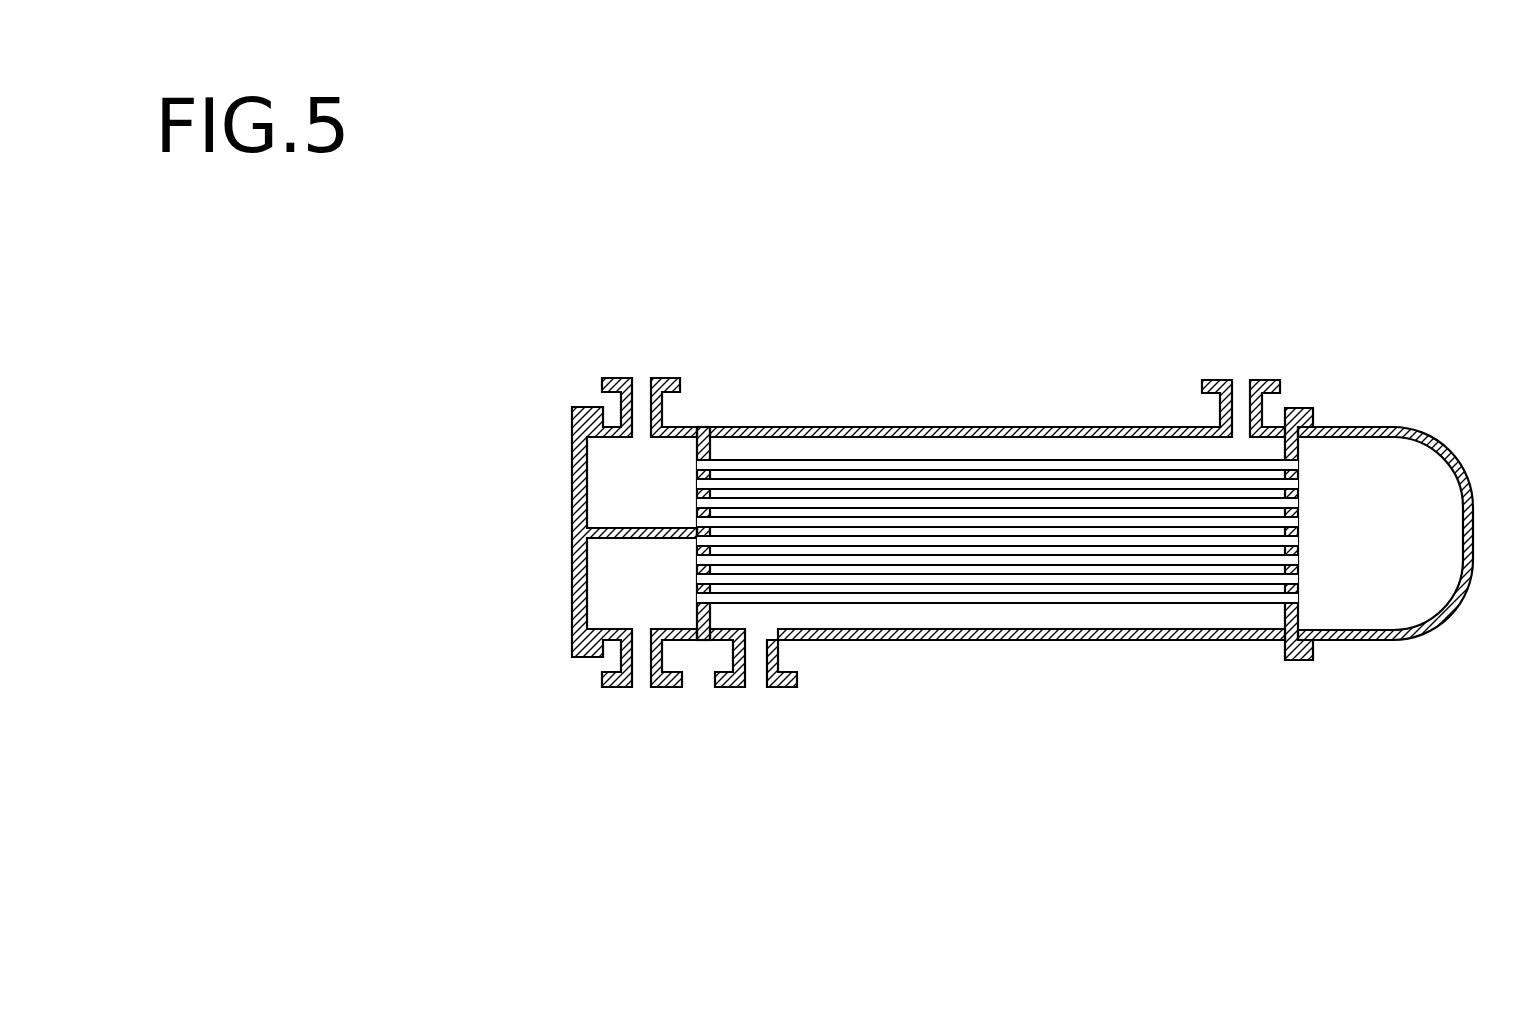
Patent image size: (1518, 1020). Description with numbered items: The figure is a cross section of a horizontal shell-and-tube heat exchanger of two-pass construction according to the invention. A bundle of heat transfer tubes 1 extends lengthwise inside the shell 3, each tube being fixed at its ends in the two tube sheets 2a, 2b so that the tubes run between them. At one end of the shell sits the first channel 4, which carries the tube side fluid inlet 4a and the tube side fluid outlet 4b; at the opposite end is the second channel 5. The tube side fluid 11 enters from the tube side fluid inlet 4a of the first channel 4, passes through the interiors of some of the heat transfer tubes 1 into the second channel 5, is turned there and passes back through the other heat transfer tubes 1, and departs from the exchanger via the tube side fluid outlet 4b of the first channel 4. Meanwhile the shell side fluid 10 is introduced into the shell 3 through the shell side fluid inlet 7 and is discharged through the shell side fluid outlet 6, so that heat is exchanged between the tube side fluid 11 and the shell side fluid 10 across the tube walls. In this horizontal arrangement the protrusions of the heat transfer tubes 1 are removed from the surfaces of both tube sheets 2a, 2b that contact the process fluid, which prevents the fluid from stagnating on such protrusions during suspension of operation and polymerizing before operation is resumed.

The heat transfer tubes 1 is at (1102, 462).
The tube sheet 2a is at (705, 425).
The tube sheet 2b is at (1292, 408).
The shell 3 is at (970, 430).
The first channel 4 is at (677, 425).
The tube side fluid inlet 4a is at (622, 688).
The tube side fluid outlet 4b is at (617, 377).
The second channel 5 is at (1360, 427).
The shell side fluid outlet 6 is at (1242, 383).
The shell side fluid inlet 7 is at (757, 680).
The shell side fluid 10 is at (885, 453).
The tube side fluid 11 is at (618, 500).